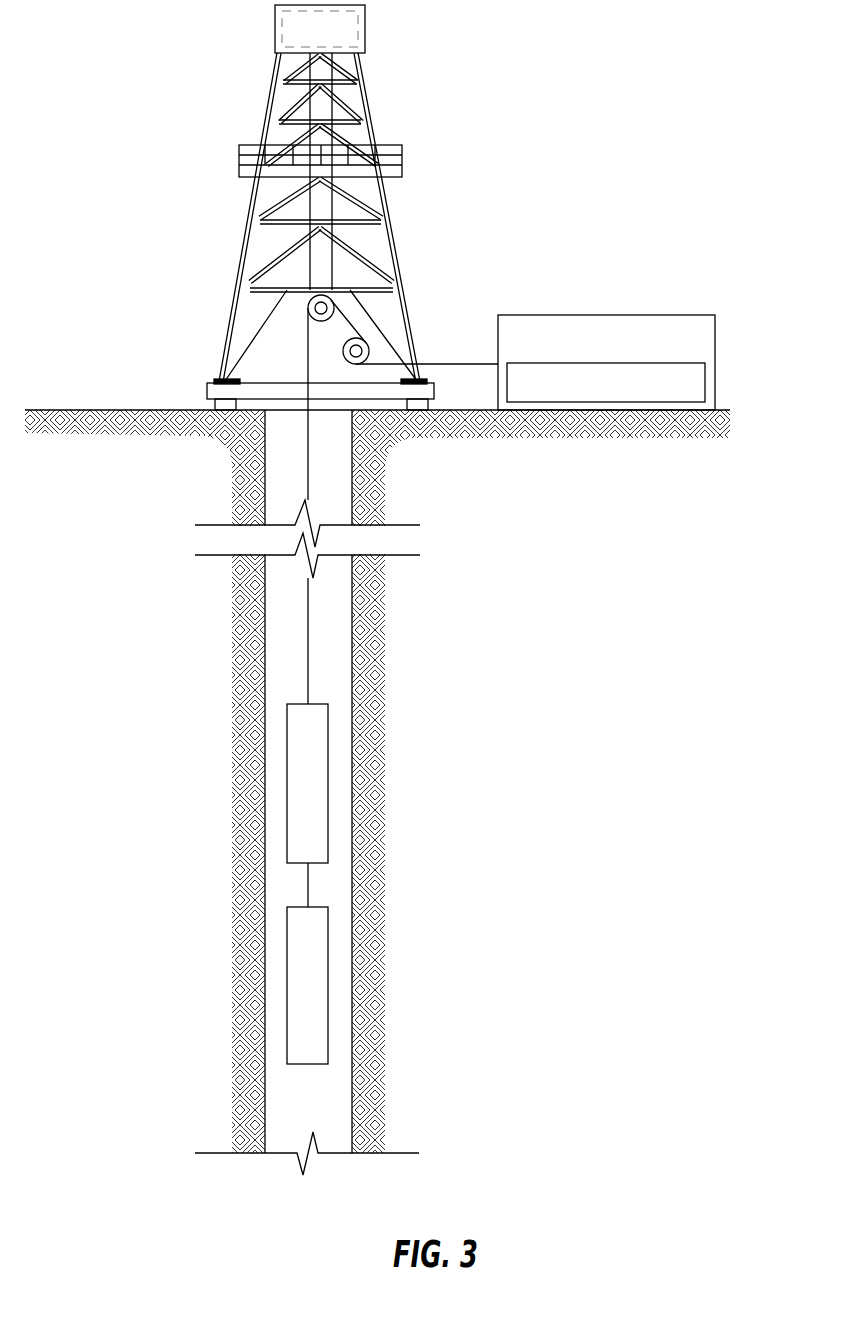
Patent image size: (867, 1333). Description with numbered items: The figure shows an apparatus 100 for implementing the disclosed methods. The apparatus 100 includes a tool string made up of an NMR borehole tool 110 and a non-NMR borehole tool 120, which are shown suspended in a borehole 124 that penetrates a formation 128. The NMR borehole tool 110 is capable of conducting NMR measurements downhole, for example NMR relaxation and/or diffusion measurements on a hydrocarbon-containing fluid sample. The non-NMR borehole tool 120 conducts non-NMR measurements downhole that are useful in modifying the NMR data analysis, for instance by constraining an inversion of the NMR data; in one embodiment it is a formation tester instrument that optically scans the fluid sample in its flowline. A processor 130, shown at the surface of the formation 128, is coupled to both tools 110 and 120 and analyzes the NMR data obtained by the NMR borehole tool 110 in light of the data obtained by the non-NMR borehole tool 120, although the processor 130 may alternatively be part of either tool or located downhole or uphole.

The apparatus 100 is at (540, 437).
The NMR borehole tool 110 is at (328, 778).
The non-NMR borehole tool 120 is at (328, 995).
The borehole 124 is at (353, 646).
The formation 128 is at (363, 692).
The processor 130 is at (606, 364).